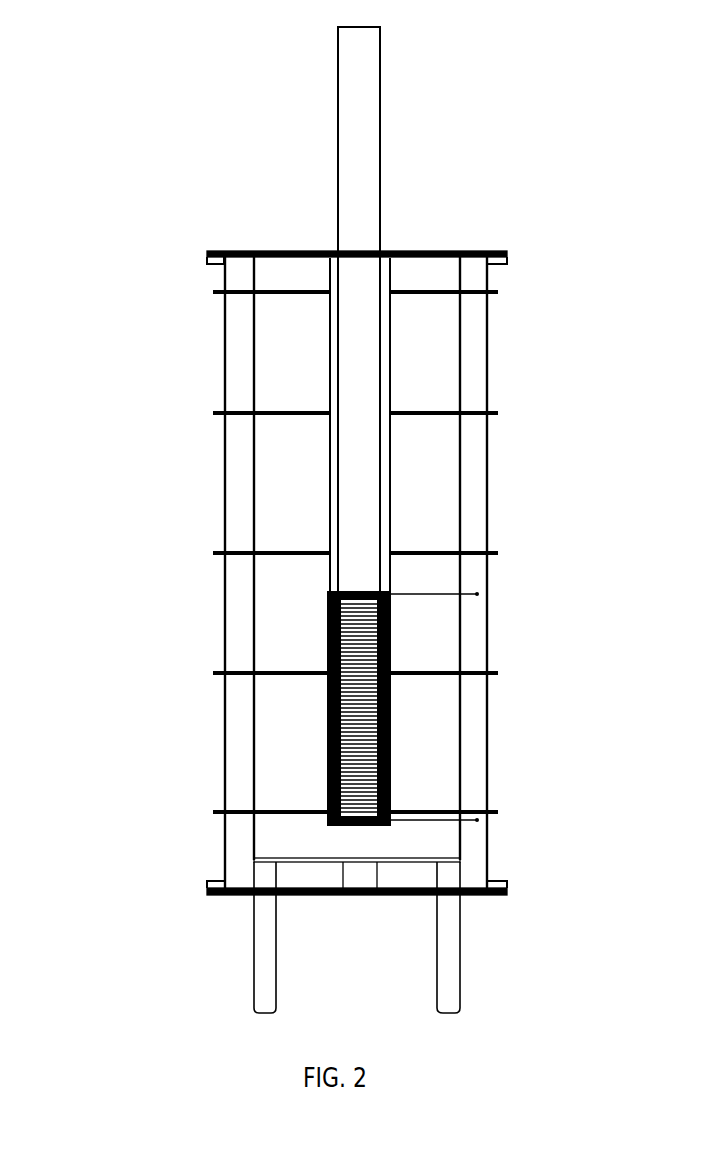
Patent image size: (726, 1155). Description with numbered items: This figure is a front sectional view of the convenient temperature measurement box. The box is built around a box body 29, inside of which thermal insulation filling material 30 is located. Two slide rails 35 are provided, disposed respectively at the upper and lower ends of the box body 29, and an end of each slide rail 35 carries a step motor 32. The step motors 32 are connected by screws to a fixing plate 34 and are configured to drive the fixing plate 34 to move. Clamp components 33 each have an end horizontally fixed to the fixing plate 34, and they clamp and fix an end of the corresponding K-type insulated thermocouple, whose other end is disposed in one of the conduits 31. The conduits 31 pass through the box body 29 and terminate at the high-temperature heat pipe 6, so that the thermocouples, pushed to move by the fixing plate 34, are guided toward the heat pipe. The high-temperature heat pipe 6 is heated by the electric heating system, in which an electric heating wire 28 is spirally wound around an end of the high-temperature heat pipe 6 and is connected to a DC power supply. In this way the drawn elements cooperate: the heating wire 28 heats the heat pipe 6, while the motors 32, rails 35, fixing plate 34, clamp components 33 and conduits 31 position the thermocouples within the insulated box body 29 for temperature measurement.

The high-temperature heat pipe 6 is at (353, 118).
The electric heating wire 28 is at (328, 742).
The box body 29 is at (252, 343).
The thermal insulation filling material 30 is at (278, 488).
The conduits 31 is at (283, 677).
The step motors 32 is at (503, 262).
The clamp components 33 is at (490, 555).
The fixing plate 34 is at (488, 657).
The slide rails 35 is at (470, 895).